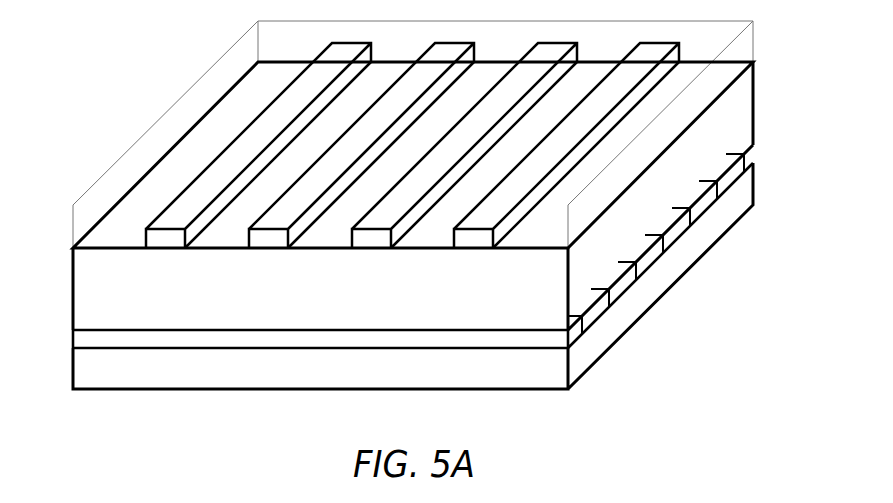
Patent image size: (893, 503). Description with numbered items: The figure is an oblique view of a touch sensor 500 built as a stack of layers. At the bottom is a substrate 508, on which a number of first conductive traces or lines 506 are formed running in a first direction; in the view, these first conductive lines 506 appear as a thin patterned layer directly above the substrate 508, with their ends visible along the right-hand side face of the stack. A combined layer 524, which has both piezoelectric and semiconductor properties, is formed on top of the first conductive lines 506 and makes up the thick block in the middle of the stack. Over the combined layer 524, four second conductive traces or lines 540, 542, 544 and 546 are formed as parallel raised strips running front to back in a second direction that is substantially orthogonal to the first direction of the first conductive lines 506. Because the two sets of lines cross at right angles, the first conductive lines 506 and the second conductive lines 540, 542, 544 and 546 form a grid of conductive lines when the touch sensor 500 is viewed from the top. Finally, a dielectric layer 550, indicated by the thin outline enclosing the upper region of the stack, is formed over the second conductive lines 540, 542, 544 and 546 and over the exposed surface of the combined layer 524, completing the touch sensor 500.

The touch sensor 500 is at (139, 35).
The dielectric layer 550 is at (73, 227).
The combined layer 524 is at (73, 291).
The first conductive lines 506 is at (73, 335).
The substrate 508 is at (73, 370).
The second conductive line 540 is at (163, 240).
The second conductive line 542 is at (265, 240).
The second conductive line 544 is at (368, 240).
The second conductive line 546 is at (470, 240).